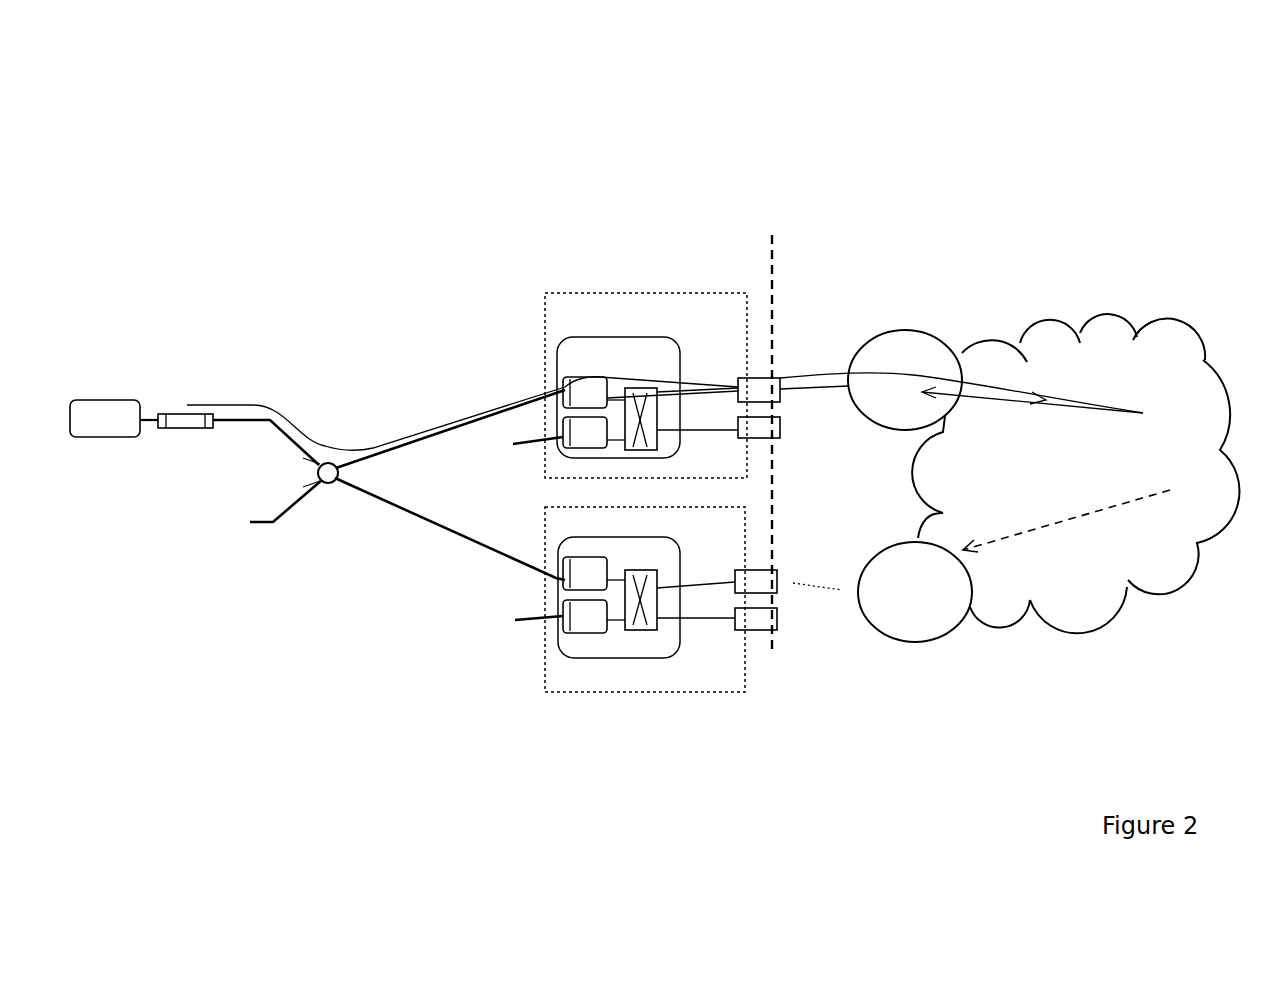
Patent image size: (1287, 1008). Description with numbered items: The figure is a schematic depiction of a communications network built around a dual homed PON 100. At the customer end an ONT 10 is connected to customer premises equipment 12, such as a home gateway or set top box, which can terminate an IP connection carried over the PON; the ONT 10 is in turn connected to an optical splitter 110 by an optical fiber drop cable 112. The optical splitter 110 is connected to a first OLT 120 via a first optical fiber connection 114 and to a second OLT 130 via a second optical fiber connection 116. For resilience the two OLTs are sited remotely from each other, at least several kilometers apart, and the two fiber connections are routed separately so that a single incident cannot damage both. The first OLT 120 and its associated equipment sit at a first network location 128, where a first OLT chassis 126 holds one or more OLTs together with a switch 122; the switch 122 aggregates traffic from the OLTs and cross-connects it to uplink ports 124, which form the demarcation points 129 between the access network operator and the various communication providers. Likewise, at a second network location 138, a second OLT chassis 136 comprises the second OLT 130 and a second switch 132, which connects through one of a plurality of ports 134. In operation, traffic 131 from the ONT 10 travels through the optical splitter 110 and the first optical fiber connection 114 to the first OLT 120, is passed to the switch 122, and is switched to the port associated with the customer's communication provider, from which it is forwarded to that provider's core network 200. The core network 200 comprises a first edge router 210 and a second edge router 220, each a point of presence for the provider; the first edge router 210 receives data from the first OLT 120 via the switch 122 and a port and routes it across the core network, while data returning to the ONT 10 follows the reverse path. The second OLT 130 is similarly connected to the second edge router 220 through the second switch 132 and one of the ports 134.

The dual homed PON 100 is at (400, 277).
The ONT 10 is at (172, 413).
The customer premises equipment 12 is at (93, 440).
The optical fiber drop cable 112 is at (240, 418).
The optical splitter 110 is at (332, 487).
The first optical fiber connection 114 is at (383, 447).
The second optical fiber connection 116 is at (450, 532).
The traffic 131 is at (470, 418).
The first OLT 120 is at (572, 377).
The switch 122 is at (640, 393).
The uplink ports 124 is at (758, 380).
The first OLT chassis 126 is at (663, 350).
The first network location 128 is at (550, 297).
The demarcation points 129 is at (775, 247).
The second OLT 130 is at (588, 573).
The second switch 132 is at (637, 630).
The ports 134 is at (755, 622).
The second OLT chassis 136 is at (663, 645).
The second network location 138 is at (560, 675).
The first edge router 210 is at (920, 355).
The second edge router 220 is at (908, 627).
The core network 200 is at (1078, 622).